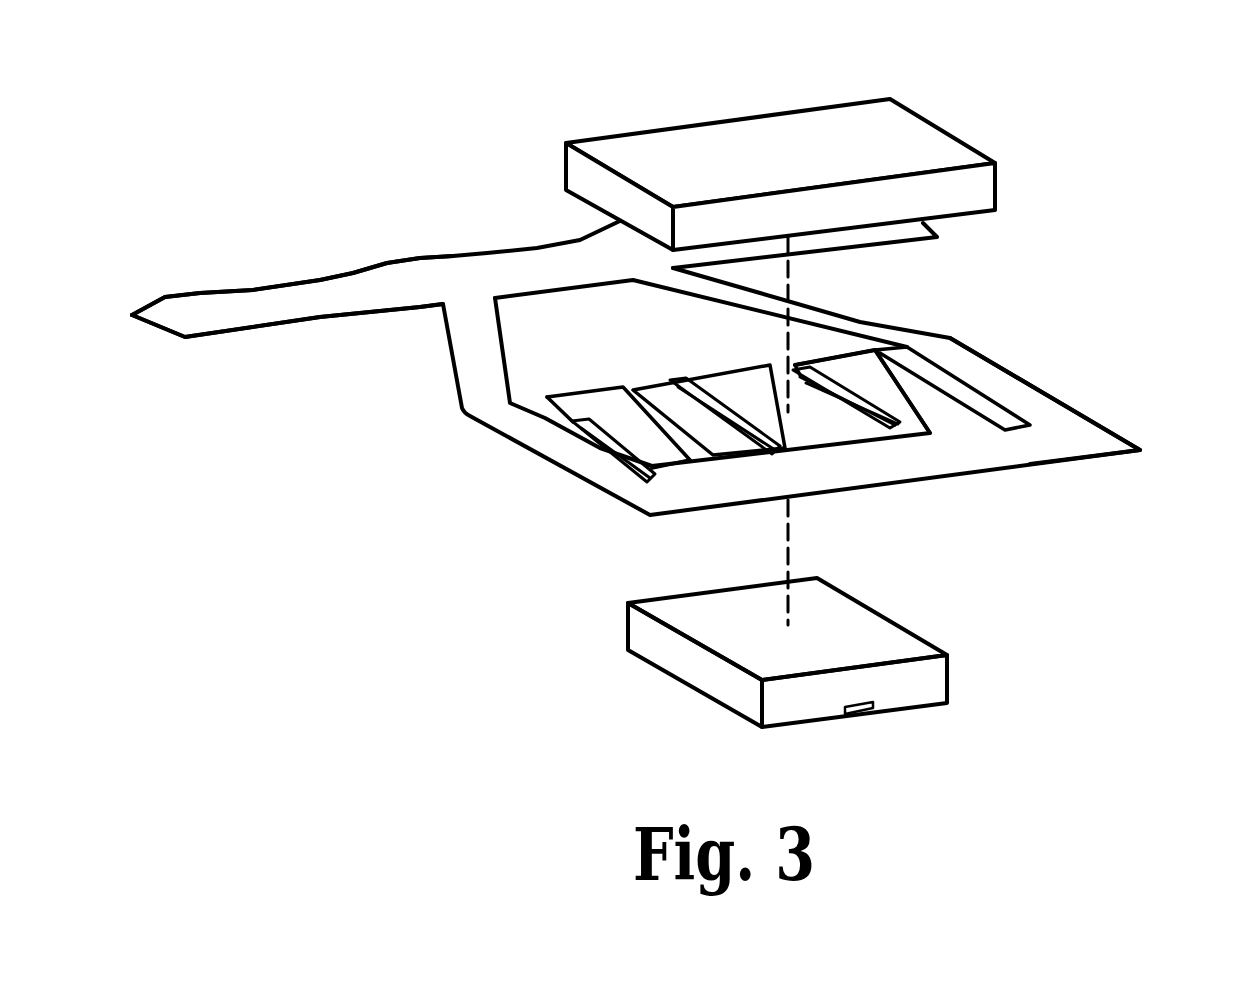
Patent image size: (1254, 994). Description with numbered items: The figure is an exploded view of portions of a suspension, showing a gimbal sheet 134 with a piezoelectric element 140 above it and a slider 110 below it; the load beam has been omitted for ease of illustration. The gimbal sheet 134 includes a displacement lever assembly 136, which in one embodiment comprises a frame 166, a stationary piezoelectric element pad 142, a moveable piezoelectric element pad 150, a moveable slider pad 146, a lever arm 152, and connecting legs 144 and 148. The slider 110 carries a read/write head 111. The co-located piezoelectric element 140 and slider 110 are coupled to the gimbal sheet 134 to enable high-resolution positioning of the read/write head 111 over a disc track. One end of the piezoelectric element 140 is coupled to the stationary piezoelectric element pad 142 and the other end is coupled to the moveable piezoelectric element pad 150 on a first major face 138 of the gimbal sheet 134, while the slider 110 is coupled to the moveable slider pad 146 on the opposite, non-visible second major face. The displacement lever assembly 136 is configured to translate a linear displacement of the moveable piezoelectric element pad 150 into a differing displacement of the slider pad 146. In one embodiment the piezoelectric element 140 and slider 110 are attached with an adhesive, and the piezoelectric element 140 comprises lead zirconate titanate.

The slider 110 is at (732, 693).
The read/write head 111 is at (860, 713).
The gimbal sheet 134 is at (528, 452).
The displacement lever assembly 136 is at (637, 372).
The first major face 138 is at (463, 292).
The piezoelectric element 140 is at (858, 110).
The stationary piezoelectric element pad 142 is at (913, 402).
The connecting leg 144 is at (898, 427).
The moveable slider pad 146 is at (822, 428).
The connecting leg 148 is at (663, 437).
The moveable piezoelectric element pad 150 is at (630, 448).
The lever arm 152 is at (717, 428).
The frame 166 is at (1062, 427).